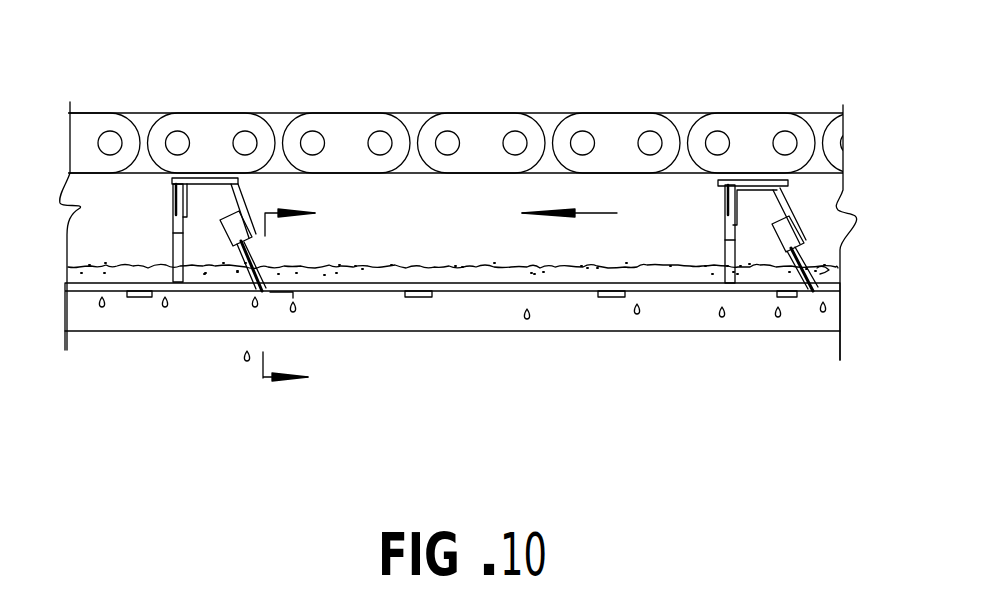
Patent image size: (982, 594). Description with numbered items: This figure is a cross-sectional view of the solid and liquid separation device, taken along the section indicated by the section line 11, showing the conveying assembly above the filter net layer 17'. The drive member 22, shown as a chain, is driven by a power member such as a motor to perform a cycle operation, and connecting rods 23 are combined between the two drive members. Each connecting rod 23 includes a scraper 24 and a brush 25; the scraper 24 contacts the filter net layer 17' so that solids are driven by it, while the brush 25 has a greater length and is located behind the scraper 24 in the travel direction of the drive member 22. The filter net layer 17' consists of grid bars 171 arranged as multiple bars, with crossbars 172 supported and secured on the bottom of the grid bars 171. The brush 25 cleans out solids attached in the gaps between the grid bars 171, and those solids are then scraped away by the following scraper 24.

The section line 11 is at (314, 294).
The drive member 22 is at (370, 127).
The connecting rod 23 is at (166, 180).
The scraper 24 is at (195, 272).
The brush 25 is at (242, 290).
The grid bar 171 is at (117, 285).
The crossbar 172 is at (608, 300).
The filter net layer 17' is at (452, 358).